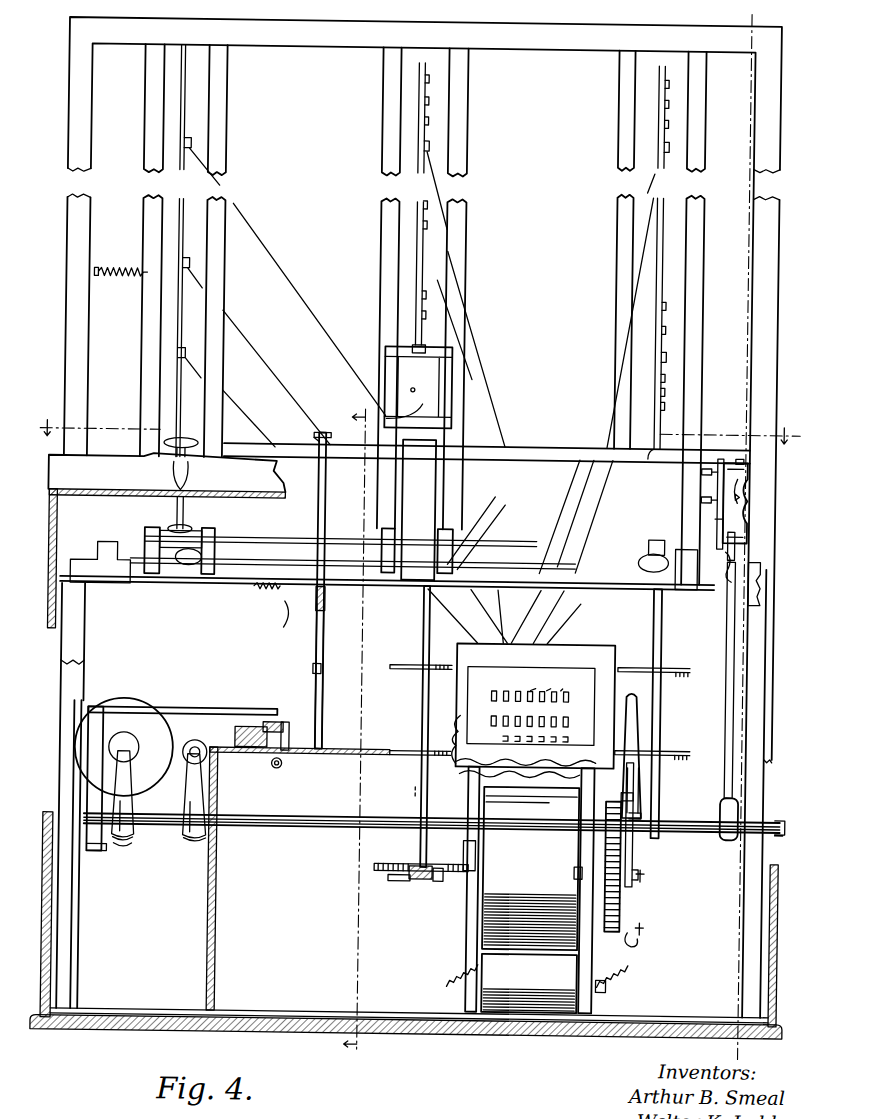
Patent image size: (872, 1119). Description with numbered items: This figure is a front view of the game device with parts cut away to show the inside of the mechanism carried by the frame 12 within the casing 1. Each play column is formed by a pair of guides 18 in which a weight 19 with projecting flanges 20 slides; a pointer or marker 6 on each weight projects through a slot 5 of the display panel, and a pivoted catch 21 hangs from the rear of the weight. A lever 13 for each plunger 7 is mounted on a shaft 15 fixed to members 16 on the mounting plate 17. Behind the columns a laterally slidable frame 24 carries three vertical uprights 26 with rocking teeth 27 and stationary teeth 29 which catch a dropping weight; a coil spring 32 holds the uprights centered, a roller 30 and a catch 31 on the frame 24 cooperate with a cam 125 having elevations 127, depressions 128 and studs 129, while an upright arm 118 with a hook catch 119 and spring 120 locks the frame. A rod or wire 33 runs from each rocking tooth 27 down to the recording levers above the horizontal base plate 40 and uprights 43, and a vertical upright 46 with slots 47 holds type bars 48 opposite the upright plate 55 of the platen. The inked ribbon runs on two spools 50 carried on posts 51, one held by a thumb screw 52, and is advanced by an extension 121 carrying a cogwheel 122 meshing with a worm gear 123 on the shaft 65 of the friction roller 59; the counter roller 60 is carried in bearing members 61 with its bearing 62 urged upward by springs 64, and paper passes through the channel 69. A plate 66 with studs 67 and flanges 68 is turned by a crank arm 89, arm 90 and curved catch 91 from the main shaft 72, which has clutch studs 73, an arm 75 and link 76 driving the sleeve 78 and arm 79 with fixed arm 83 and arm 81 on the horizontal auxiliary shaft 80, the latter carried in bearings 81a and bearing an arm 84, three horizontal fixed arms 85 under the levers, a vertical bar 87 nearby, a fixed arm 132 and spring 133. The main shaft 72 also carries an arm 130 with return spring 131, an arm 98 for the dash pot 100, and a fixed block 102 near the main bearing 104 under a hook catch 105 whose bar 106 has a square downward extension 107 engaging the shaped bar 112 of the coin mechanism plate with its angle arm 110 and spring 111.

The casing 1 is at (75, 479).
The vertical apertures or slots 5 is at (756, 532).
The pointer or marker 6 is at (415, 428).
The operating member or plunger 7 is at (359, 728).
The frame 12 is at (621, 27).
The lever 13 is at (198, 531).
The shaft 15 is at (262, 535).
The members 16 is at (158, 525).
The base plate or mounting plate 17 is at (266, 582).
The guides 18 is at (145, 113).
The weight 19 is at (392, 416).
The projecting flanges 20 is at (392, 391).
The catch 21 is at (432, 339).
The frame 24 is at (541, 440).
The vertical uprights 26 is at (187, 86).
The rocking teeth 27 is at (195, 140).
The stationary teeth 29 is at (425, 116).
The roller 30 is at (744, 452).
The catch 31 is at (319, 435).
The coil spring 32 is at (110, 267).
The rod or wire 33 is at (247, 327).
The horizontal base plate 40 is at (380, 741).
The uprights 43 is at (512, 654).
The vertical upright 46 is at (587, 652).
The slots 47 is at (512, 682).
The printer bars or type bars 48 is at (547, 680).
The vertical spools 50 is at (417, 659).
The posts or pins 51 is at (428, 612).
The thumb screw 52 is at (673, 756).
The upright plate 55 is at (474, 725).
The friction roller 59 is at (490, 836).
The counter roller 60 is at (545, 994).
The bearing members 61 is at (479, 922).
The bearing 62 is at (622, 984).
The springs 64 is at (460, 962).
The shaft 65 is at (404, 876).
The plate 66 is at (633, 889).
The studs 67 is at (653, 806).
The flange 68 is at (656, 866).
The channel 69 is at (522, 764).
The main shaft 72 is at (697, 822).
The studs 73 is at (788, 812).
The arm 75 is at (748, 790).
The link 76 is at (735, 681).
The sleeve 78 is at (768, 578).
The arm 79 is at (754, 535).
The horizontal auxiliary shaft 80 is at (688, 592).
The arm 81 is at (724, 500).
The bearings 81a is at (103, 541).
The fixed arm 83 is at (735, 530).
The arm 84 is at (722, 512).
The horizontal fixed arms 85 is at (196, 564).
The vertical bar 87 is at (322, 665).
The crank arm 89 is at (645, 788).
The arm 90 is at (644, 834).
The curved catch 91 is at (650, 864).
The arm 98 is at (147, 843).
The dash pot 100 is at (184, 800).
The fixed block 102 is at (110, 849).
The main bearing 104 is at (91, 689).
The hook catch 105 is at (115, 713).
The bar 106 is at (210, 708).
The square downward extension 107 is at (262, 726).
The angle arm 110 is at (328, 738).
The spring 111 is at (303, 760).
The shaped bar 112 is at (302, 719).
The upright arm 118 is at (324, 514).
The hook catch 119 is at (334, 426).
The spring 120 is at (334, 593).
The extension 121 is at (426, 784).
The horizontal cogwheel 122 is at (412, 857).
The worm gear 123 is at (449, 876).
The cam 125 is at (756, 485).
The elevations 127 is at (755, 460).
The depressions 128 is at (756, 490).
The studs 129 is at (708, 463).
The arm 130 is at (201, 771).
The spring 131 is at (203, 740).
The fixed arm 132 is at (296, 624).
The spring 133 is at (270, 589).